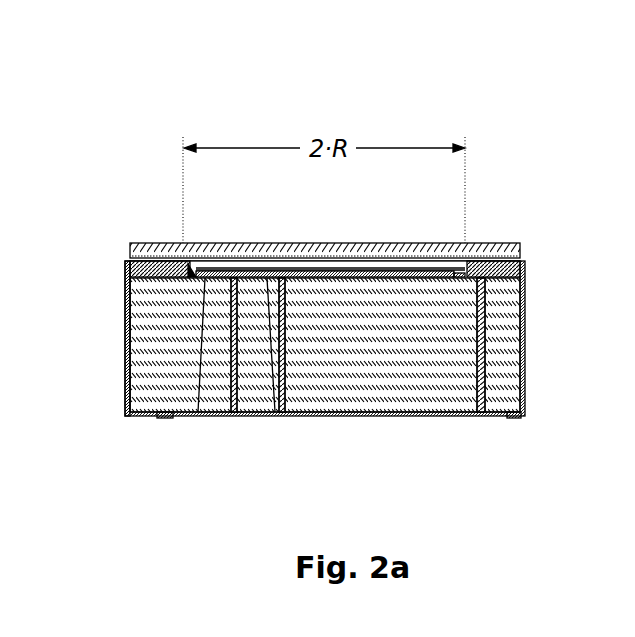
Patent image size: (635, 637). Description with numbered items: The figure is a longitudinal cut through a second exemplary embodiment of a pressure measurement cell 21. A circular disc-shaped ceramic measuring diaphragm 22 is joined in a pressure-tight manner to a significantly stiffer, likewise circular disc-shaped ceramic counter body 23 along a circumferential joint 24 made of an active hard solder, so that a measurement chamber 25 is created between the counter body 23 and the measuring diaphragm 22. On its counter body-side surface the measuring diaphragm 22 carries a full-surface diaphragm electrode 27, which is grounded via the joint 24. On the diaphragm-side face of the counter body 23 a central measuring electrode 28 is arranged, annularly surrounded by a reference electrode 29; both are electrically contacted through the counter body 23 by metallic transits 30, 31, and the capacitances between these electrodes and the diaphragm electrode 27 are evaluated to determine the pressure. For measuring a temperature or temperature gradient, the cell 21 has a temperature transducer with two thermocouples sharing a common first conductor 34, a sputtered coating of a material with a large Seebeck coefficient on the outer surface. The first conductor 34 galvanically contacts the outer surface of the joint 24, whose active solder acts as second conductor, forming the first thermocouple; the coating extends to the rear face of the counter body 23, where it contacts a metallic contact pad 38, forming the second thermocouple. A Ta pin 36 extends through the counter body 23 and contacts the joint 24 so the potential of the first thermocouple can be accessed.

The pressure measurement cell 21 is at (145, 118).
The measuring diaphragm 22 is at (520, 248).
The counter body 23 is at (503, 357).
The joint 24 is at (518, 268).
The measurement chamber 25 is at (188, 263).
The diaphragm electrode 27 is at (220, 258).
The measuring electrode 28 is at (275, 415).
The reference electrode 29 is at (198, 415).
The metallic transit 30 is at (284, 413).
The metallic transit 31 is at (232, 415).
The first conductor 34 is at (126, 313).
The Ta pin 36 is at (482, 413).
The metallic contact pad 38 is at (163, 418).